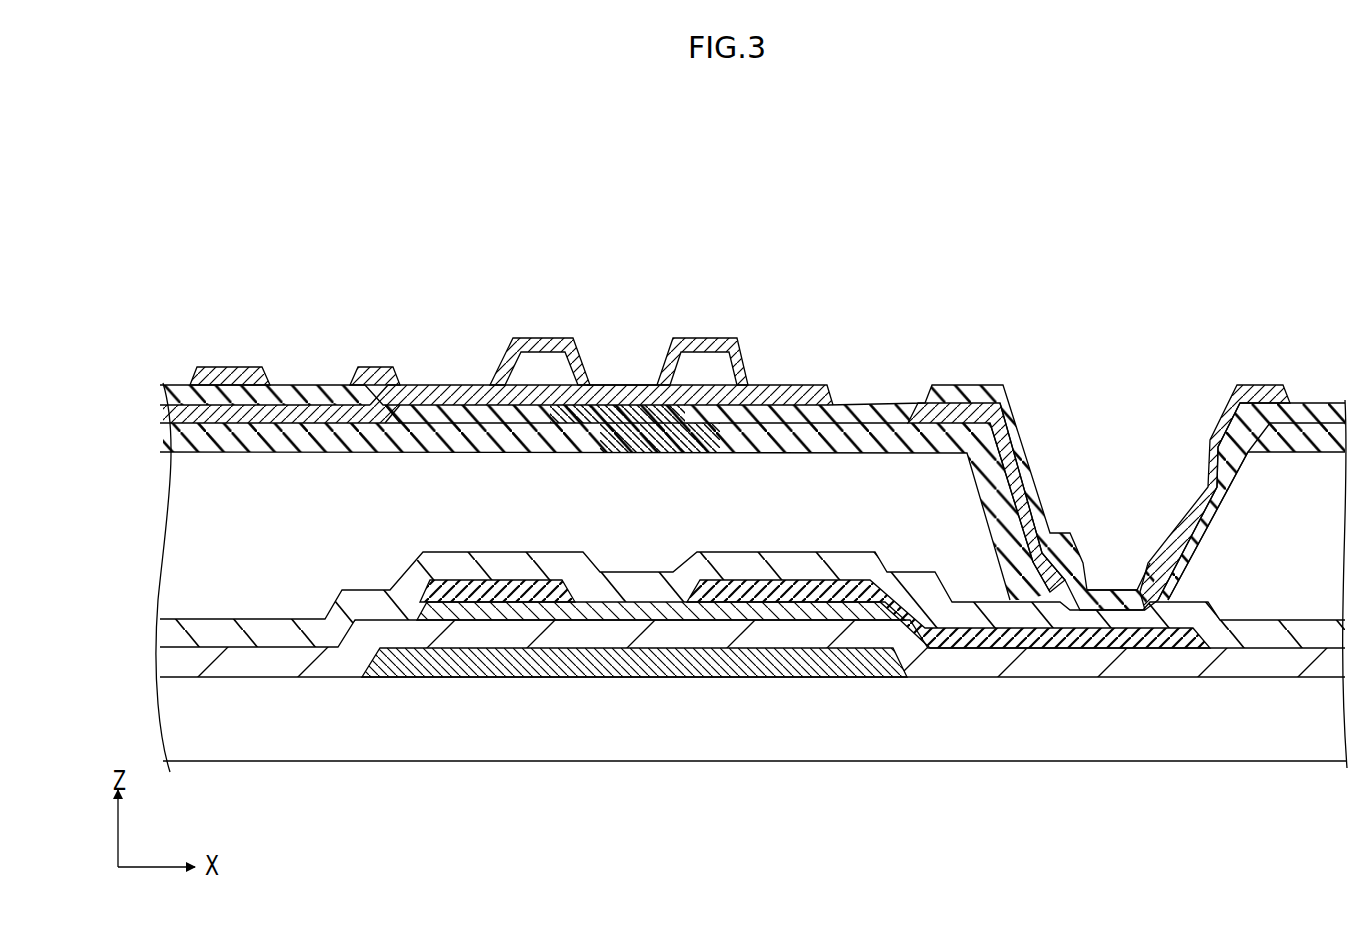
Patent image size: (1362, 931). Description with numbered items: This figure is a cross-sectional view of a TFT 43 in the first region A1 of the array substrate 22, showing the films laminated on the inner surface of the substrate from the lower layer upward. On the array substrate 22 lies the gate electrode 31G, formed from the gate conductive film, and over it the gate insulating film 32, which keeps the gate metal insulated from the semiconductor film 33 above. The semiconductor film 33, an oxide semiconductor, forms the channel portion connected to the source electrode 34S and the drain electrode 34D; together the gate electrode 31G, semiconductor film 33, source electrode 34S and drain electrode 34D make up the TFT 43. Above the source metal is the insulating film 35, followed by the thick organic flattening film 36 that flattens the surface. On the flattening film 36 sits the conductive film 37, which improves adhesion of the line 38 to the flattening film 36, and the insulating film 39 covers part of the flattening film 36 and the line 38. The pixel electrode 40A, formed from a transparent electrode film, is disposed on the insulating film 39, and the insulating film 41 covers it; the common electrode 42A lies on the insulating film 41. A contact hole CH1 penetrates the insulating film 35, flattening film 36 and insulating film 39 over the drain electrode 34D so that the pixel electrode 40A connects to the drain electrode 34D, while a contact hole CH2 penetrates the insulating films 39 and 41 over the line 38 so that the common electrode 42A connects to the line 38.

The array substrate 22 is at (280, 740).
The gate electrode 31G is at (658, 672).
The gate insulating film 32 is at (163, 660).
The semiconductor film 33 is at (598, 612).
The source electrode 34S is at (498, 592).
The drain electrode 34D is at (784, 600).
The insulating film 35 is at (163, 630).
The flattening film 36 is at (208, 546).
The conductive film 37 is at (680, 435).
The line 38 is at (637, 400).
The insulating film 39 is at (240, 445).
The pixel electrode 40A is at (972, 342).
The insulating film 41 is at (181, 383).
The common electrode 42A is at (450, 385).
The TFT 43 is at (795, 845).
The contact hole CH1 is at (1116, 562).
The contact hole CH2 is at (600, 362).
The first region A1 is at (268, 187).